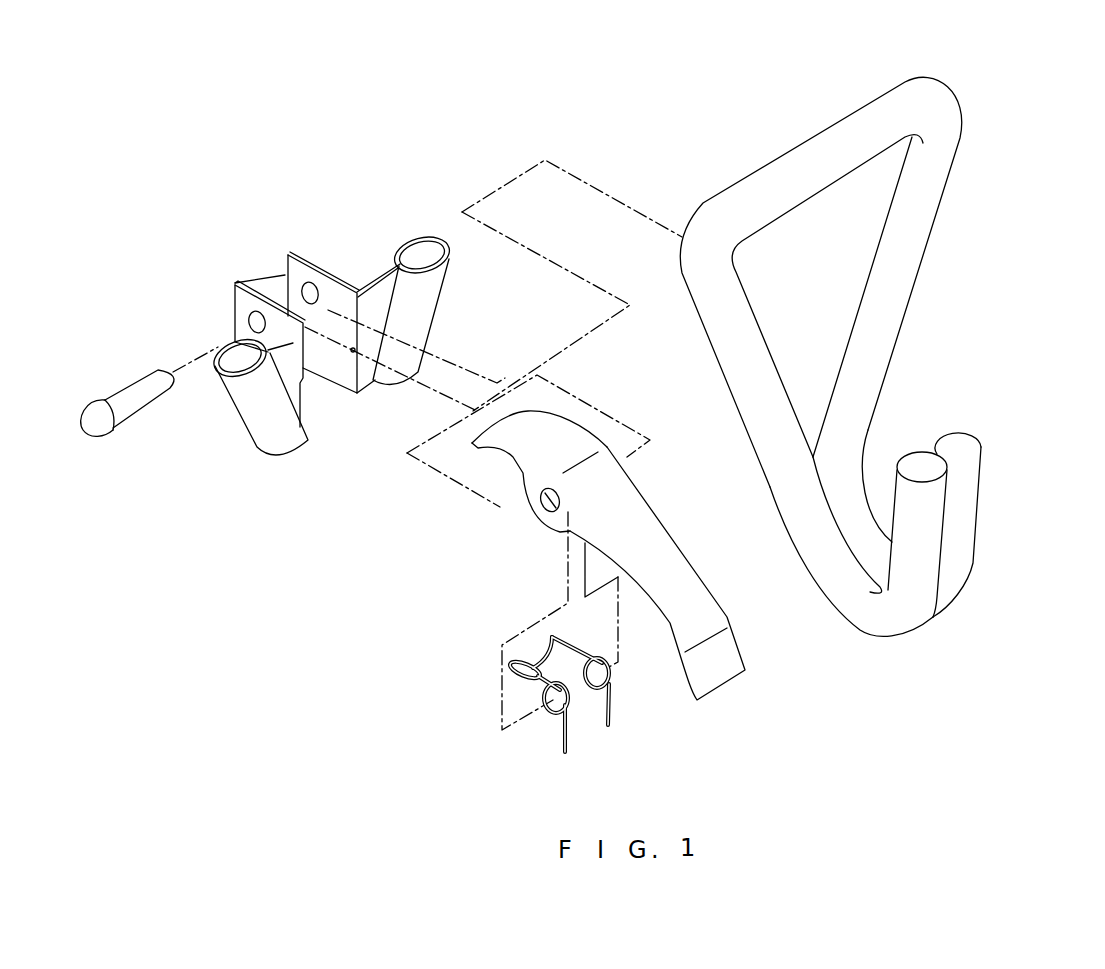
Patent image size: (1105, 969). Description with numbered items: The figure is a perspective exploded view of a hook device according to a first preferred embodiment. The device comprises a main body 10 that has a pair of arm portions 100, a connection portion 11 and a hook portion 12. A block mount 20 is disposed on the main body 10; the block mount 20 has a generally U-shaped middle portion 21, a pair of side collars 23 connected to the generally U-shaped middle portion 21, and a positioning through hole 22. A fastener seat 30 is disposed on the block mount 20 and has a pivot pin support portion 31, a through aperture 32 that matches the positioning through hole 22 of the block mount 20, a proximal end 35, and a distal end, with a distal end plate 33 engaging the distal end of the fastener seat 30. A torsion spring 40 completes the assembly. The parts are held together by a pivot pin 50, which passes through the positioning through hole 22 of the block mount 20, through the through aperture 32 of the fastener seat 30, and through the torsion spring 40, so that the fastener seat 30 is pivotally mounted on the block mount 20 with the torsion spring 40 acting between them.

The main body 10 is at (1000, 130).
The arm portions 100 is at (927, 253).
The connection portion 11 is at (815, 458).
The hook portion 12 is at (967, 520).
The block mount 20 is at (319, 203).
The generally U-shaped middle portion 21 is at (277, 297).
The positioning through hole 22 is at (310, 297).
The side collars 23 is at (424, 310).
The fastener seat 30 is at (624, 390).
The pivot pin support portion 31 is at (500, 505).
The through aperture 32 is at (543, 527).
The distal end plate 33 is at (723, 657).
The proximal end 35 is at (550, 443).
The torsion spring 40 is at (487, 716).
The pivot pin 50 is at (133, 397).